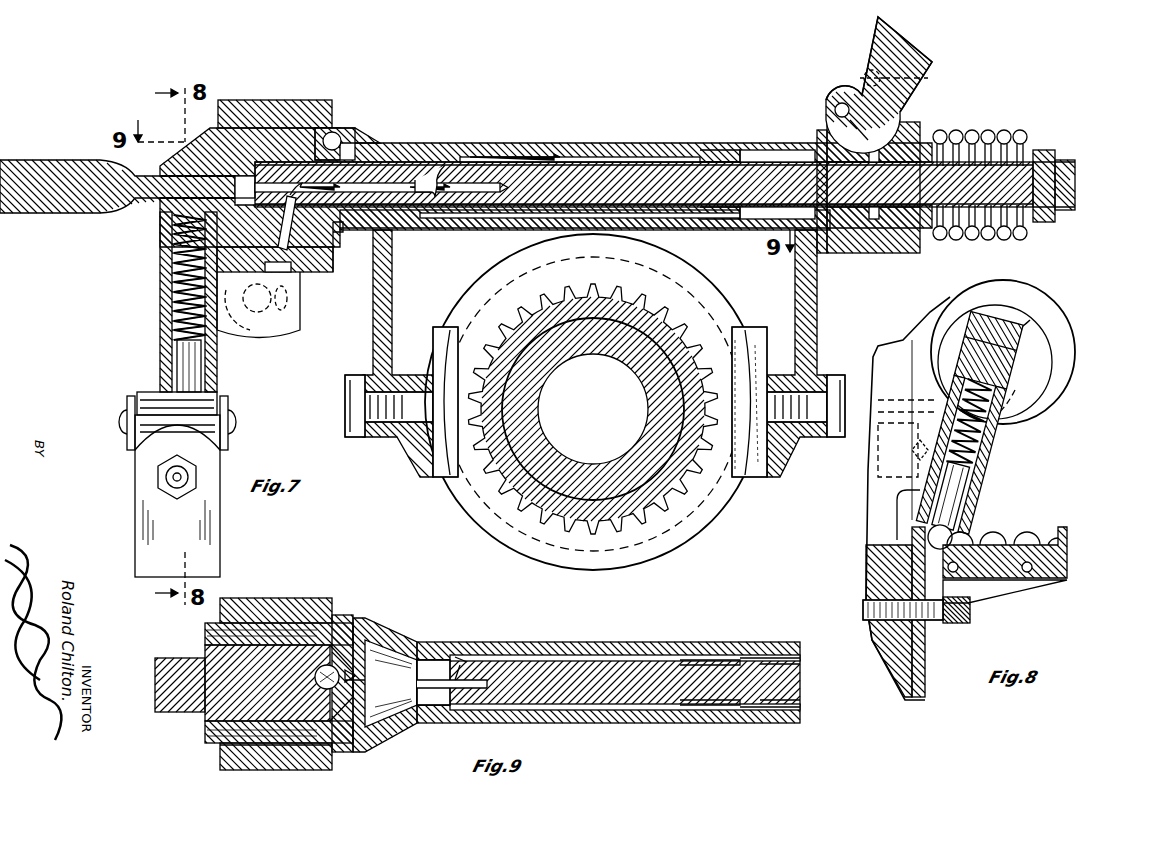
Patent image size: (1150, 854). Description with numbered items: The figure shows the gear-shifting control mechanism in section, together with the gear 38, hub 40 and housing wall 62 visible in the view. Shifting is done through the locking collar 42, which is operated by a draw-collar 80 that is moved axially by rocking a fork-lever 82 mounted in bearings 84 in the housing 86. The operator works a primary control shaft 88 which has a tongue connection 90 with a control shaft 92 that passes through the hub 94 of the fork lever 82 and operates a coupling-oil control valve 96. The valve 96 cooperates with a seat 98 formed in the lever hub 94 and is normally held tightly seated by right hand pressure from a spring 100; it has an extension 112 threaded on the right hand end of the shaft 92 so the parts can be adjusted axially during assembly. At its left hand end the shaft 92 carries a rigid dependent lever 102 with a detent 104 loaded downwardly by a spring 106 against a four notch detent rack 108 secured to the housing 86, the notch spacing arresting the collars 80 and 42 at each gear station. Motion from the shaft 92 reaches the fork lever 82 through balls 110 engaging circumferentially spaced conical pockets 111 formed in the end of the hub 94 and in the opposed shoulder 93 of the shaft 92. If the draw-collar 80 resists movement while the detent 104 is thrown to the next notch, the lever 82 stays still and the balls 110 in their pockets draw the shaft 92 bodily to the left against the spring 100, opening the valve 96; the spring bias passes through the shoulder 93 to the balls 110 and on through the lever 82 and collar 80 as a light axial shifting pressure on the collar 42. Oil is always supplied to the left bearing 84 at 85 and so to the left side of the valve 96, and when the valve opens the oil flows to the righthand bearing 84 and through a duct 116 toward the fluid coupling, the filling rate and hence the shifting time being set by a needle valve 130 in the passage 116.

In FIG. 7, the gear 38 is at (650, 330).
In FIG. 7, the gear hub 40 is at (650, 345).
In FIG. 7, the locking collar 42 is at (704, 516).
In FIG. 7, the housing wall 62 is at (817, 283).
In FIG. 7, the draw-collar 80 is at (768, 457).
In FIG. 7, the fork-lever 82 is at (392, 265).
In FIG. 7, the bearings 84 is at (260, 104).
In FIG. 9, the bearings 84 is at (272, 598).
In FIG. 8, the bearings 84 is at (1070, 348).
In FIG. 7, the oil supply point 85 is at (305, 278).
In FIG. 8, the oil supply point 85 is at (1040, 408).
In FIG. 8, the housing 86 is at (878, 677).
In FIG. 7, the primary control shaft 88 is at (55, 162).
In FIG. 7, the tongue connection 90 is at (162, 207).
In FIG. 8, the tongue connection 90 is at (1040, 383).
In FIG. 7, the control shaft 92 is at (198, 168).
In FIG. 9, the control shaft 92 is at (205, 642).
In FIG. 8, the control shaft 92 is at (1030, 320).
In FIG. 7, the shoulder 93 is at (335, 262).
In FIG. 9, the shoulder 93 is at (330, 754).
In FIG. 7, the hub 94 is at (475, 157).
In FIG. 9, the hub 94 is at (462, 644).
In FIG. 7, the coupling-oil control valve 96 is at (732, 158).
In FIG. 9, the coupling-oil control valve 96 is at (694, 705).
In FIG. 7, the seat 98 is at (771, 175).
In FIG. 9, the seat 98 is at (768, 722).
In FIG. 7, the spring 100 is at (1018, 238).
In FIG. 7, the dependent lever 102 is at (162, 280).
In FIG. 8, the dependent lever 102 is at (1000, 430).
In FIG. 7, the detent 104 is at (216, 394).
In FIG. 8, the detent 104 is at (980, 514).
In FIG. 7, the spring 106 is at (170, 251).
In FIG. 8, the spring 106 is at (1008, 433).
In FIG. 7, the four notch detent rack 108 is at (208, 444).
In FIG. 8, the four notch detent rack 108 is at (1067, 556).
In FIG. 7, the balls 110 is at (338, 135).
In FIG. 9, the balls 110 is at (342, 706).
In FIG. 9, the conical pockets 111 is at (355, 675).
In FIG. 7, the extension 112 is at (1048, 152).
In FIG. 7, the duct 116 is at (836, 110).
In FIG. 7, the needle valve 130 is at (913, 78).